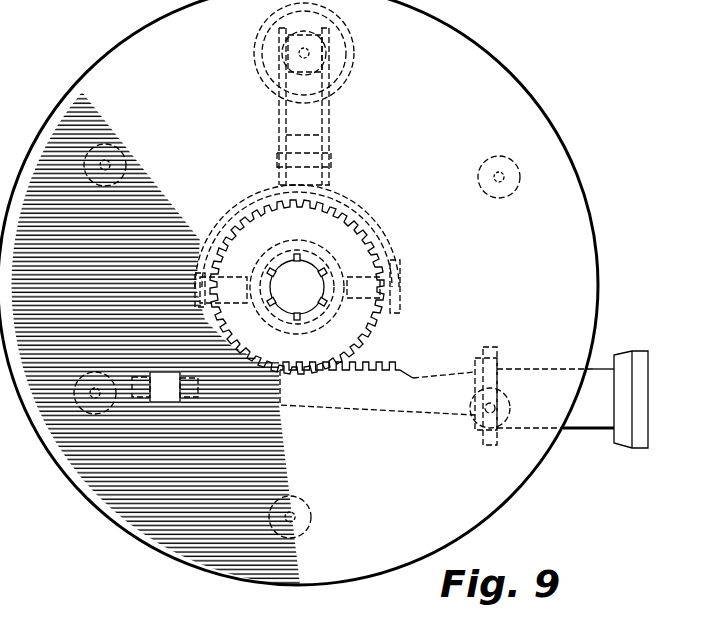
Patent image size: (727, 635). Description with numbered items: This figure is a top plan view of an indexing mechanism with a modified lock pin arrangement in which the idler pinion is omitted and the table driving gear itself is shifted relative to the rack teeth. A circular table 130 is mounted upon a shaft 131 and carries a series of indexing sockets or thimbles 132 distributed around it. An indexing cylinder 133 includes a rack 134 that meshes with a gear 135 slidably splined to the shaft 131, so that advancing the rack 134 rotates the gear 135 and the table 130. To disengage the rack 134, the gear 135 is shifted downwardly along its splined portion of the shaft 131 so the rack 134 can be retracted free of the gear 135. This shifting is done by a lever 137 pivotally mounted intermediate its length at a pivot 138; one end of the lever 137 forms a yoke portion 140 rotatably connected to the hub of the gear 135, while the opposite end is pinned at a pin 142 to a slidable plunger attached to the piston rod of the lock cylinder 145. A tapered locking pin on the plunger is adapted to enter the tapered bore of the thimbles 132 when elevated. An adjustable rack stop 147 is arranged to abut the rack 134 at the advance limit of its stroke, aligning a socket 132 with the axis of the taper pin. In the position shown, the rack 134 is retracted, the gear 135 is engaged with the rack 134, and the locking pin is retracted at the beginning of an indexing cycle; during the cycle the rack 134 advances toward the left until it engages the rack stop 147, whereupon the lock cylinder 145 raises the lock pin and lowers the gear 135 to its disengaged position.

The table 130 is at (575, 268).
The shaft 131 is at (313, 287).
The indexing sockets or thimbles 132 is at (126, 151).
The indexing cylinder 133 is at (596, 380).
The rack 134 is at (422, 412).
The gear 135 is at (364, 332).
The lever 137 is at (330, 127).
The pivot 138 is at (305, 152).
The yoke portion 140 is at (401, 304).
The pin 142 is at (325, 42).
The lock cylinder 145 is at (352, 58).
The adjustable rack stop 147 is at (175, 402).